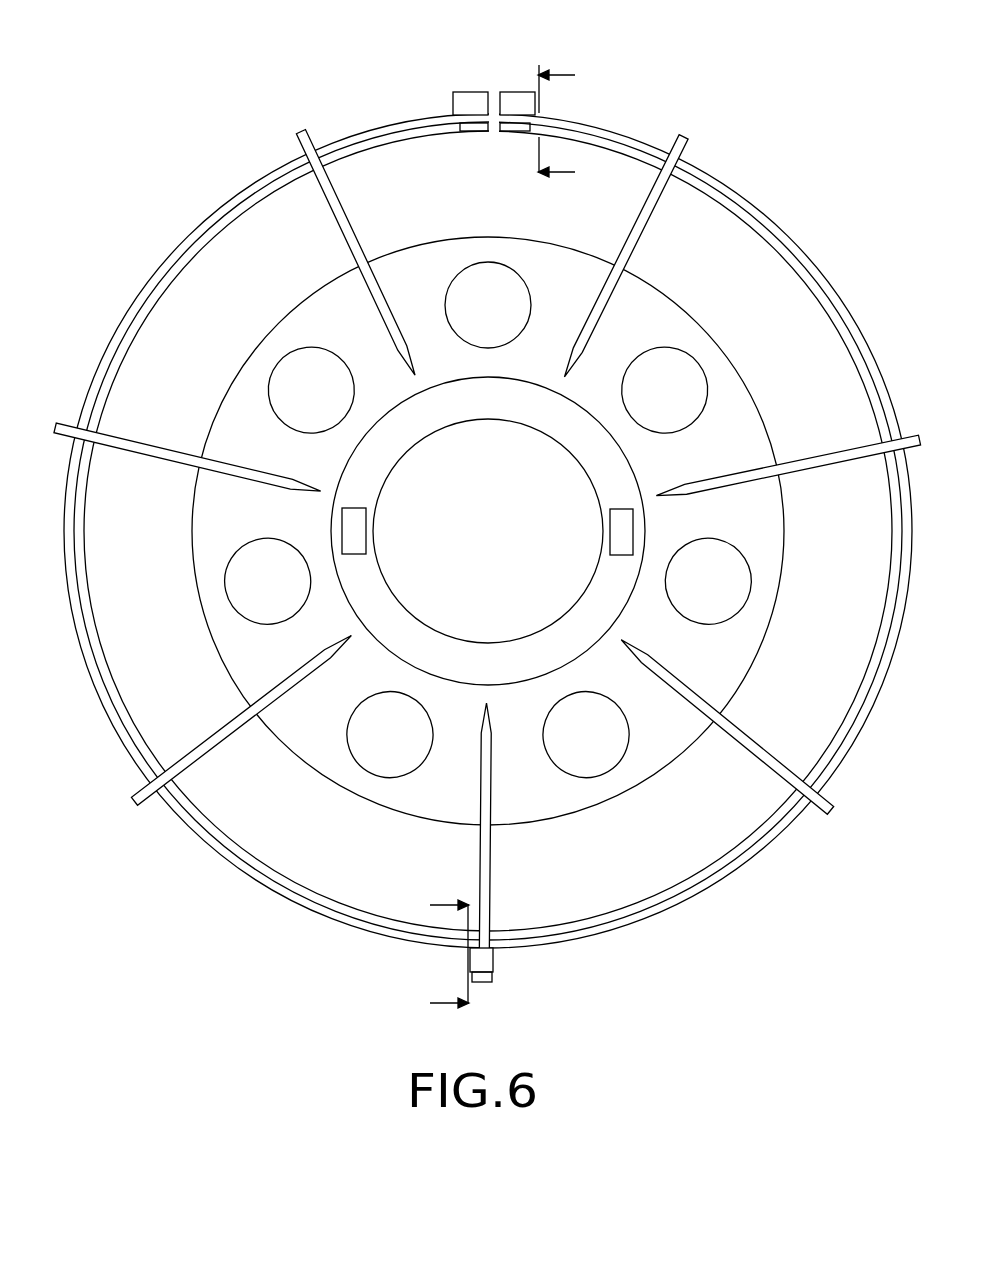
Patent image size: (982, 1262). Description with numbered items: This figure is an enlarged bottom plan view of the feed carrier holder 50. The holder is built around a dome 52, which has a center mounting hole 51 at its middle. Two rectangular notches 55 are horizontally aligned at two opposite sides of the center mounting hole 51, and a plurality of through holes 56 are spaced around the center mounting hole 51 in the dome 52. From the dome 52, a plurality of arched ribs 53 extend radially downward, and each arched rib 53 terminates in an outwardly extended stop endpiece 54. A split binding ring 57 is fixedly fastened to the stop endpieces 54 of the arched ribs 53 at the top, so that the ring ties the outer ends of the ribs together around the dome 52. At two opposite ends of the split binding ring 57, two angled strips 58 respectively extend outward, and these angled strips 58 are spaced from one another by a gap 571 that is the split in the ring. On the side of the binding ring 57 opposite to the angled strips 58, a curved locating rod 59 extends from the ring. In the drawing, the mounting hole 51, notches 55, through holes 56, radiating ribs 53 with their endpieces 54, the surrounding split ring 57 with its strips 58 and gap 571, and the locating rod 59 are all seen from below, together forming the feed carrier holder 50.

The feed carrier holder 50 is at (330, 105).
The center mounting hole 51 is at (567, 577).
The dome 52 is at (737, 405).
The arched ribs 53 is at (640, 230).
The stop endpiece 54 is at (685, 138).
The rectangular notches 55 is at (620, 530).
The through holes 56 is at (692, 380).
The split binding ring 57 is at (745, 208).
The gap 571 is at (490, 126).
The angled strips 58 is at (507, 95).
The curved locating rod 59 is at (487, 968).